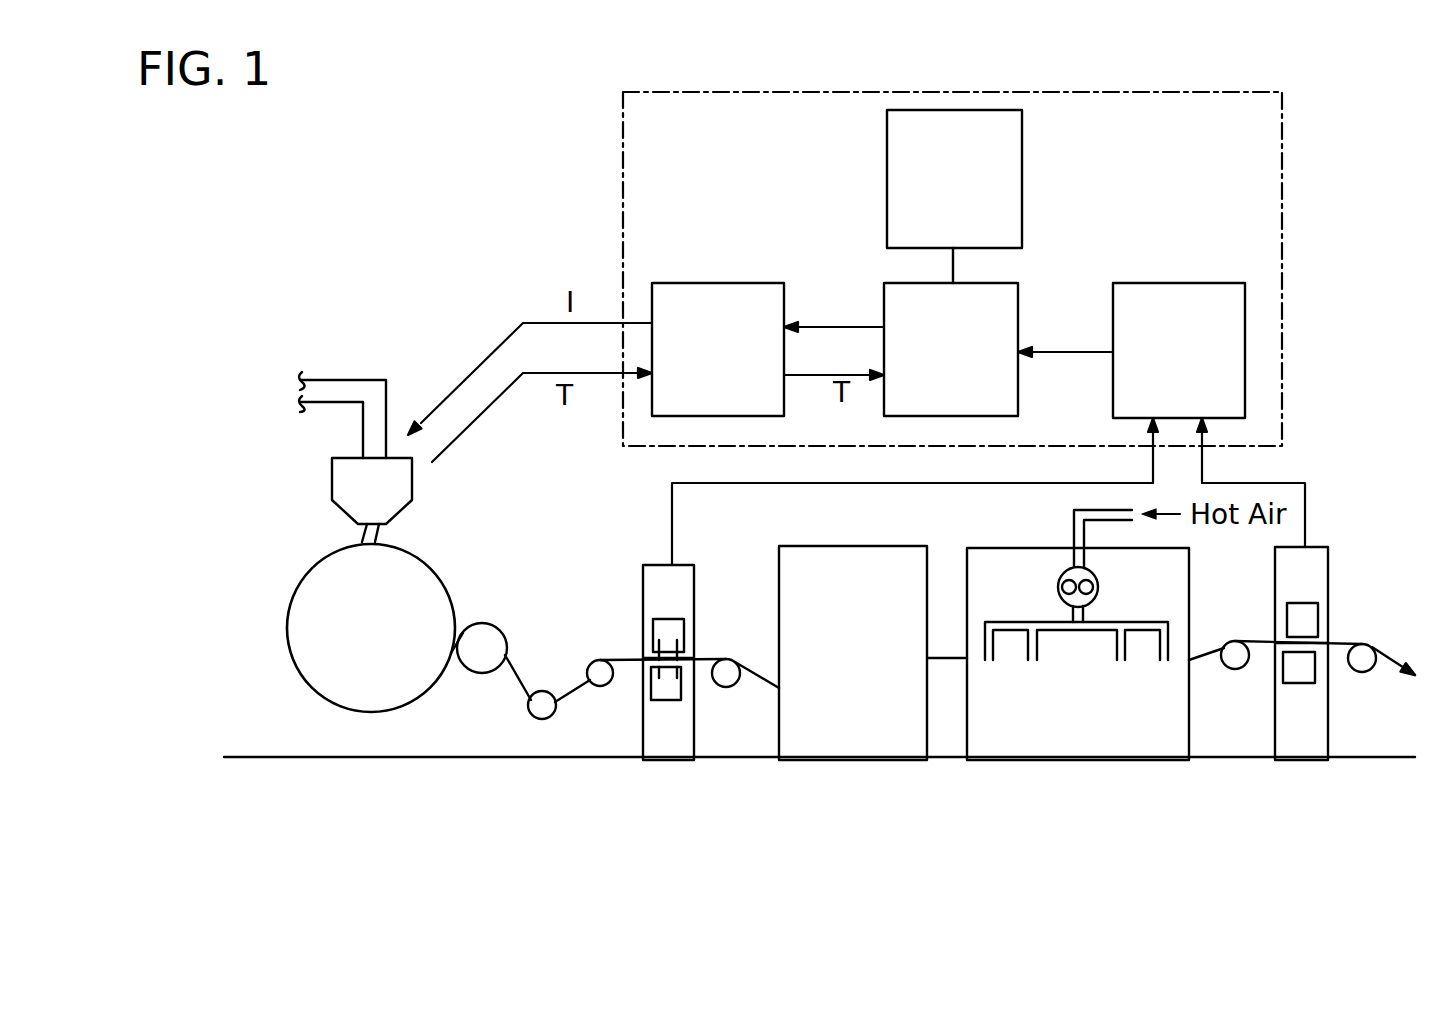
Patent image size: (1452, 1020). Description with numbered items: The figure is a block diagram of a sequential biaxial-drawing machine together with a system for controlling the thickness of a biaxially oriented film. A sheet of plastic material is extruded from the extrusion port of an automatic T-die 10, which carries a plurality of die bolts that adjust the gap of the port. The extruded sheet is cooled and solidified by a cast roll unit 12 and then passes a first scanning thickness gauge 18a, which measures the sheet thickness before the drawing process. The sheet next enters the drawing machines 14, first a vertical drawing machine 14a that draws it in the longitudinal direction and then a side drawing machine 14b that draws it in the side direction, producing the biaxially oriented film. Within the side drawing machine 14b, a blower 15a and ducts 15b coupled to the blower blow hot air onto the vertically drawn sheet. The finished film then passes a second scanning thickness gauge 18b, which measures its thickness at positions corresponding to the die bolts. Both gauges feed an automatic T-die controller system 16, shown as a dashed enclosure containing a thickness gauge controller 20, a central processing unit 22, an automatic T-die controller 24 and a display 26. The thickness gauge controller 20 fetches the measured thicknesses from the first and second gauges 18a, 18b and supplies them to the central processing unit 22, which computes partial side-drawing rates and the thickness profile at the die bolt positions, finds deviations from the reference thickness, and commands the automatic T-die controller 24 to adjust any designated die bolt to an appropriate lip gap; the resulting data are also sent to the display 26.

The automatic T-die 10 is at (338, 490).
The cast roll unit 12 is at (271, 661).
The drawing machines 14 is at (984, 731).
The vertical drawing machine 14a is at (883, 738).
The side drawing machine 14b is at (1017, 738).
The blower 15a is at (1068, 578).
The ducts 15b is at (1170, 620).
The automatic T-die controller system 16 is at (1285, 168).
The first scanning thickness gauge 18a is at (628, 576).
The second scanning thickness gauge 18b is at (1341, 542).
The thickness gauge controller 20 is at (1228, 292).
The central processing unit 22 is at (884, 300).
The automatic T-die controller 24 is at (693, 293).
The display 26 is at (887, 148).